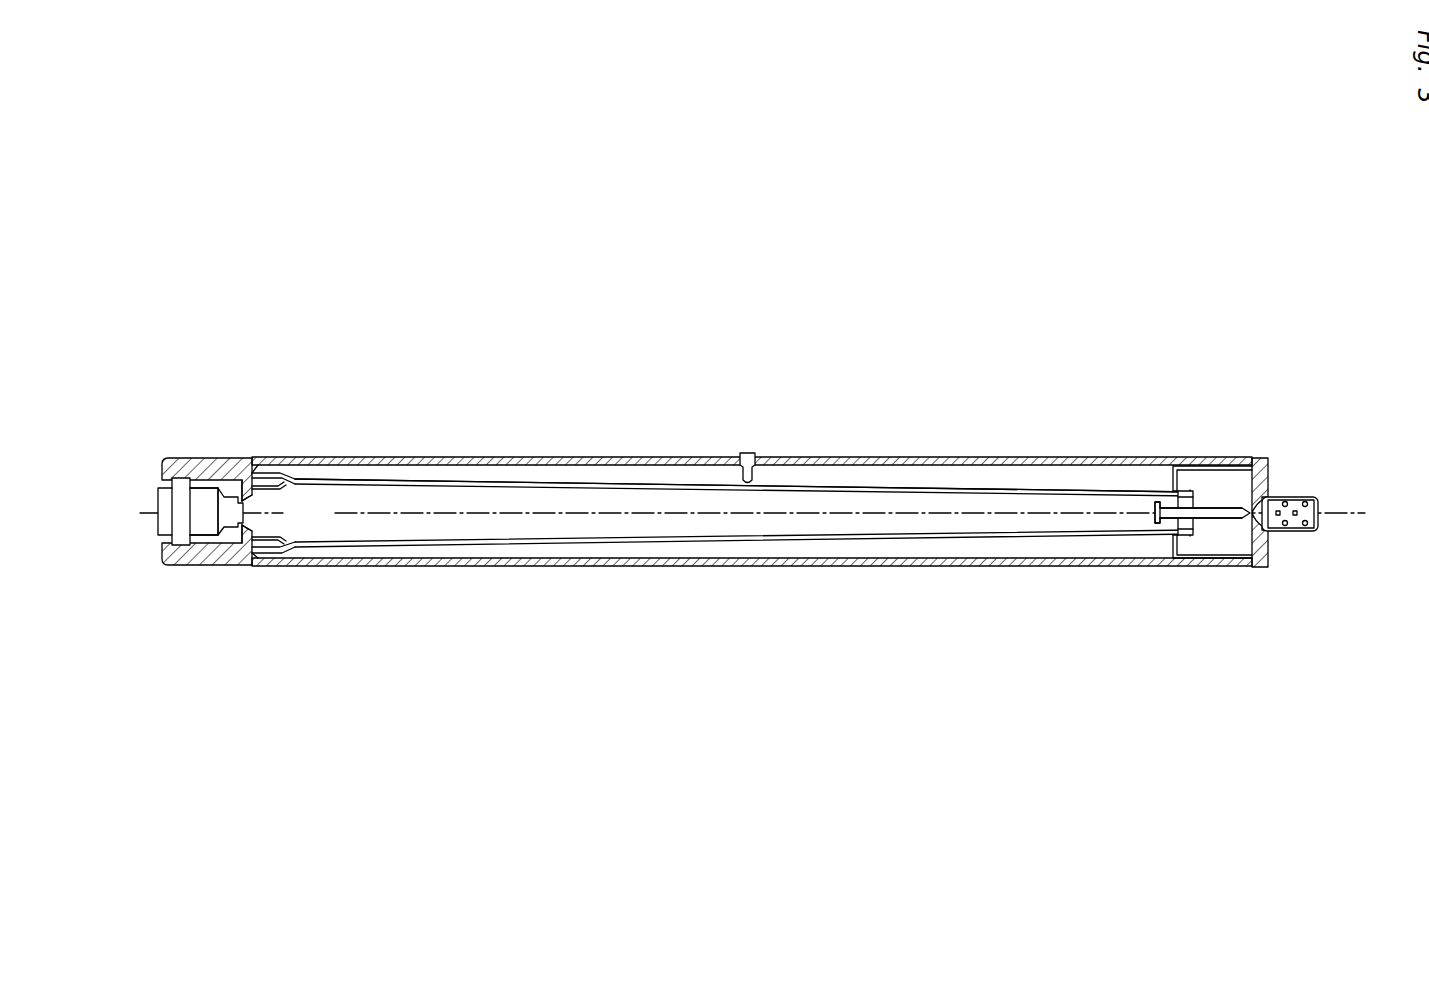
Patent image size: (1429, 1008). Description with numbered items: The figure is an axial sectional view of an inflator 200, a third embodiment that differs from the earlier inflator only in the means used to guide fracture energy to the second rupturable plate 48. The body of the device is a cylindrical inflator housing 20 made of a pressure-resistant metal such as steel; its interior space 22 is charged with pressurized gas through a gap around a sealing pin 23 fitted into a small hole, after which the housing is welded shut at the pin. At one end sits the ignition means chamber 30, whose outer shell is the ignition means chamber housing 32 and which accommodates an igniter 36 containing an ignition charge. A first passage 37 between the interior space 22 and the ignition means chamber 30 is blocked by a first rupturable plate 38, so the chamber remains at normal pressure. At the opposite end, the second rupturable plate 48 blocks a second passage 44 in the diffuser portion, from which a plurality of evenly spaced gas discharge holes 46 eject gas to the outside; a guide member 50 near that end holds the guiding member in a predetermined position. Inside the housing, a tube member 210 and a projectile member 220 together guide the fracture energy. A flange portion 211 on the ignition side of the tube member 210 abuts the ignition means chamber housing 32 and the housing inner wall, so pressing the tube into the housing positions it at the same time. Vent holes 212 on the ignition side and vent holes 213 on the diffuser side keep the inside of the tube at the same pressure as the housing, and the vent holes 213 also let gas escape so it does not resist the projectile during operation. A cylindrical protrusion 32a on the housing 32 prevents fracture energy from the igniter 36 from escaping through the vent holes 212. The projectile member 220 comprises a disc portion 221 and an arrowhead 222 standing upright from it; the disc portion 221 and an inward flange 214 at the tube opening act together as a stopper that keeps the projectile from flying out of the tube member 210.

The inflator 200 is at (606, 421).
The inflator housing 20 is at (856, 458).
The interior space 22 is at (942, 482).
The sealing pin 23 is at (746, 454).
The tube member 210 is at (720, 545).
The flange portion 211 is at (260, 557).
The vent holes 212 is at (289, 553).
The cylindrical protrusion 32a is at (268, 537).
The ignition means chamber housing 32 is at (200, 466).
The first passage 37 is at (243, 490).
The first rupturable plate 38 is at (244, 537).
The igniter 36 is at (173, 522).
The ignition means chamber 30 is at (222, 535).
The guide member 50 is at (1168, 548).
The vent holes 213 is at (1172, 492).
The inward flange 214 is at (1186, 495).
The projectile member 220 is at (1212, 503).
The disc portion 221 is at (1152, 515).
The arrowhead 222 is at (1228, 518).
The second rupturable plate 48 is at (1254, 535).
The second passage 44 is at (1268, 506).
The gas discharge holes 46 is at (1297, 532).